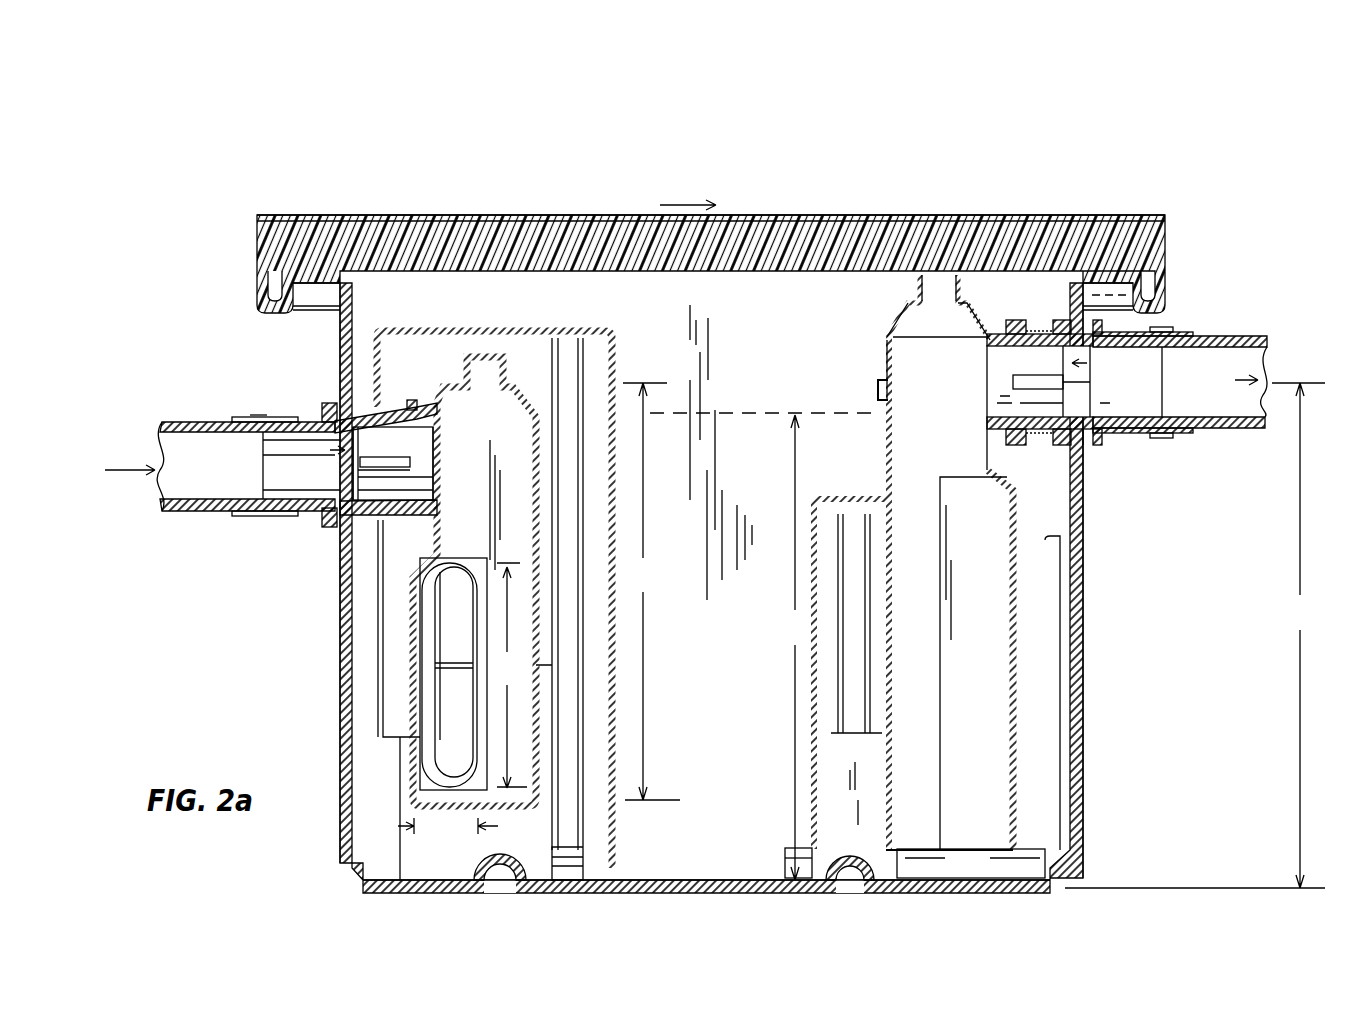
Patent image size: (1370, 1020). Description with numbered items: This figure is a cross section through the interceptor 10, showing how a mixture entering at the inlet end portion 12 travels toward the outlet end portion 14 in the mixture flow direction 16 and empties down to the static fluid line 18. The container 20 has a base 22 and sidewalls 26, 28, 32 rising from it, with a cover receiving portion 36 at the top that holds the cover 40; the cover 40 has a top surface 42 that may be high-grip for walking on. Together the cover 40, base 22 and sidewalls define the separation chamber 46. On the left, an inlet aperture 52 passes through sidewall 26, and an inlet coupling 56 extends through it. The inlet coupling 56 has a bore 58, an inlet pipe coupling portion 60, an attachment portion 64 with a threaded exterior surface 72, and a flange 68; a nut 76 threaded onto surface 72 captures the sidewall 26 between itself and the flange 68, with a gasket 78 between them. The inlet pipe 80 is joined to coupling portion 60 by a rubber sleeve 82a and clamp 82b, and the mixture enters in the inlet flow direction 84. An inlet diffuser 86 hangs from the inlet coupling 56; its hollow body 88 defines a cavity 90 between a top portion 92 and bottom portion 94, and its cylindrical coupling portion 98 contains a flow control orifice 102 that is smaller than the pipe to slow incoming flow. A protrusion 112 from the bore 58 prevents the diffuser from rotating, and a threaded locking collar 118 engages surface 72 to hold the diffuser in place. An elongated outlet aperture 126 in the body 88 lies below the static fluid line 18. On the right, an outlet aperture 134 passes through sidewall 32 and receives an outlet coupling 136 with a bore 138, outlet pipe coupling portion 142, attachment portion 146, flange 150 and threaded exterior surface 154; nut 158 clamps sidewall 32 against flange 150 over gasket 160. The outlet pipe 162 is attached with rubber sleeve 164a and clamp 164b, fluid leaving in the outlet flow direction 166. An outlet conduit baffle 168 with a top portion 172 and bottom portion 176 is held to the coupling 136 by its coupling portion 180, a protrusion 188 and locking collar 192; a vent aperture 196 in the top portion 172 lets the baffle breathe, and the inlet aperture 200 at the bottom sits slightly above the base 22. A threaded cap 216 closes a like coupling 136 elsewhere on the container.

The interceptor 10 is at (1111, 99).
The inlet end portion 12 is at (374, 176).
The outlet end portion 14 is at (1001, 184).
The mixture flow direction 16 is at (688, 178).
The static fluid line 18 is at (712, 408).
The container 20 is at (697, 618).
The base 22 is at (655, 880).
The sidewall 26 is at (340, 605).
The sidewall 28 is at (690, 678).
The sidewall 32 is at (1082, 665).
The cover receiving portion 36 is at (330, 262).
The cover 40 is at (455, 222).
The top surface 42 is at (534, 208).
The separation chamber 46 is at (751, 839).
The inlet aperture 52 is at (339, 435).
The inlet coupling 56 is at (300, 413).
The bore 58 is at (280, 455).
The inlet pipe coupling portion 60 is at (320, 512).
The attachment portion 64 is at (390, 400).
The flange 68 is at (332, 400).
The threaded exterior surface 72 is at (362, 400).
The nut 76 is at (343, 548).
The gasket 78 is at (330, 560).
The inlet pipe 80 is at (172, 420).
The rubber sleeve 82a is at (234, 418).
The clamp 82b is at (258, 416).
The inlet flow direction 84 is at (117, 485).
The inlet diffuser 86 is at (540, 495).
The body 88 is at (545, 630).
The cavity 90 is at (515, 408).
The top portion 92 is at (450, 400).
The bottom portion 94 is at (545, 780).
The coupling portion 98 is at (420, 490).
The flow control orifice 102 is at (347, 487).
The protrusion 112 is at (360, 453).
The locking collar 118 is at (420, 530).
The outlet aperture 126 is at (462, 565).
The outlet aperture 134 is at (1088, 363).
The outlet coupling 136 is at (1108, 440).
The bore 138 is at (1130, 400).
The outlet pipe coupling portion 142 is at (1115, 345).
The attachment portion 146 is at (1040, 332).
The flange 150 is at (1078, 445).
The threaded exterior surface 154 is at (1040, 440).
The nut 158 is at (1060, 545).
The gasket 160 is at (1092, 305).
The outlet pipe 162 is at (1248, 338).
The rubber sleeve 164a is at (1185, 440).
The clamp 164b is at (1165, 440).
The outlet flow direction 166 is at (1262, 368).
The outlet conduit baffle 168 is at (890, 330).
The top portion 172 is at (902, 318).
The bottom portion 176 is at (880, 795).
The coupling portion 180 is at (995, 355).
The protrusion 188 is at (1012, 403).
The locking collar 192 is at (948, 330).
The vent aperture 196 is at (932, 300).
The inlet aperture 200 is at (986, 849).
The threaded cap 216 is at (878, 398).